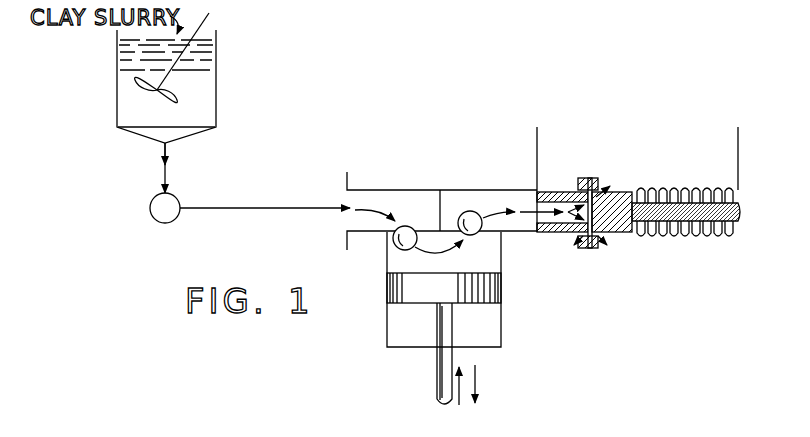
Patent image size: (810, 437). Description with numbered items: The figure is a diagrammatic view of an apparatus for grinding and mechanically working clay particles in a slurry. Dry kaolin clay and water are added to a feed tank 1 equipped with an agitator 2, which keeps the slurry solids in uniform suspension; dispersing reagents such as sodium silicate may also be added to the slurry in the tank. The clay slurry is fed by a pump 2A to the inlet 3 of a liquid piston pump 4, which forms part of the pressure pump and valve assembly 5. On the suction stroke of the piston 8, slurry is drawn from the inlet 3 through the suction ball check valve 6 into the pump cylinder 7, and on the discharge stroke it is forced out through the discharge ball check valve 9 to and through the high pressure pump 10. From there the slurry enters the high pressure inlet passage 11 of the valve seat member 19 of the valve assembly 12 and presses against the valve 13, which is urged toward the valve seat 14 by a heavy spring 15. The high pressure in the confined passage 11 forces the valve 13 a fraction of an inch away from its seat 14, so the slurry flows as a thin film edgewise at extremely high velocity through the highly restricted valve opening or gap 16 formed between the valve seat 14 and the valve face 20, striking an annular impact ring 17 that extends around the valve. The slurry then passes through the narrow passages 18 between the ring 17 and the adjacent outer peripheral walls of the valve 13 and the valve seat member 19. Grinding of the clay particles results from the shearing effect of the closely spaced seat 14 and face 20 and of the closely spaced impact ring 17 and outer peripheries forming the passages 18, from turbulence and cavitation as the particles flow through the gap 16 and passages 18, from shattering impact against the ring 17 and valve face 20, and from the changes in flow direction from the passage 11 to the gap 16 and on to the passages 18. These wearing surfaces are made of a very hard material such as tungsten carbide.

The feed tank 1 is at (117, 92).
The agitator 2 is at (211, 15).
The pump 2A is at (163, 224).
The inlet 3 is at (348, 218).
The liquid piston pump 4 is at (535, 185).
The pressure pump and valve assembly 5 is at (478, 158).
The suction ball check valve 6 is at (399, 241).
The pump cylinder 7 is at (402, 258).
The piston 8 is at (488, 290).
The discharge ball check valve 9 is at (496, 232).
The high pressure pump 10 is at (522, 222).
The high pressure inlet passage 11 is at (552, 233).
The valve assembly 12 is at (736, 142).
The valve 13 is at (622, 225).
The valve seat 14 is at (572, 184).
The heavy spring 15 is at (674, 234).
The valve opening or gap 16 is at (587, 250).
The annular impact ring 17 is at (595, 190).
The narrow passages 18 is at (578, 178).
The valve seat member 19 is at (570, 224).
The valve face 20 is at (608, 196).